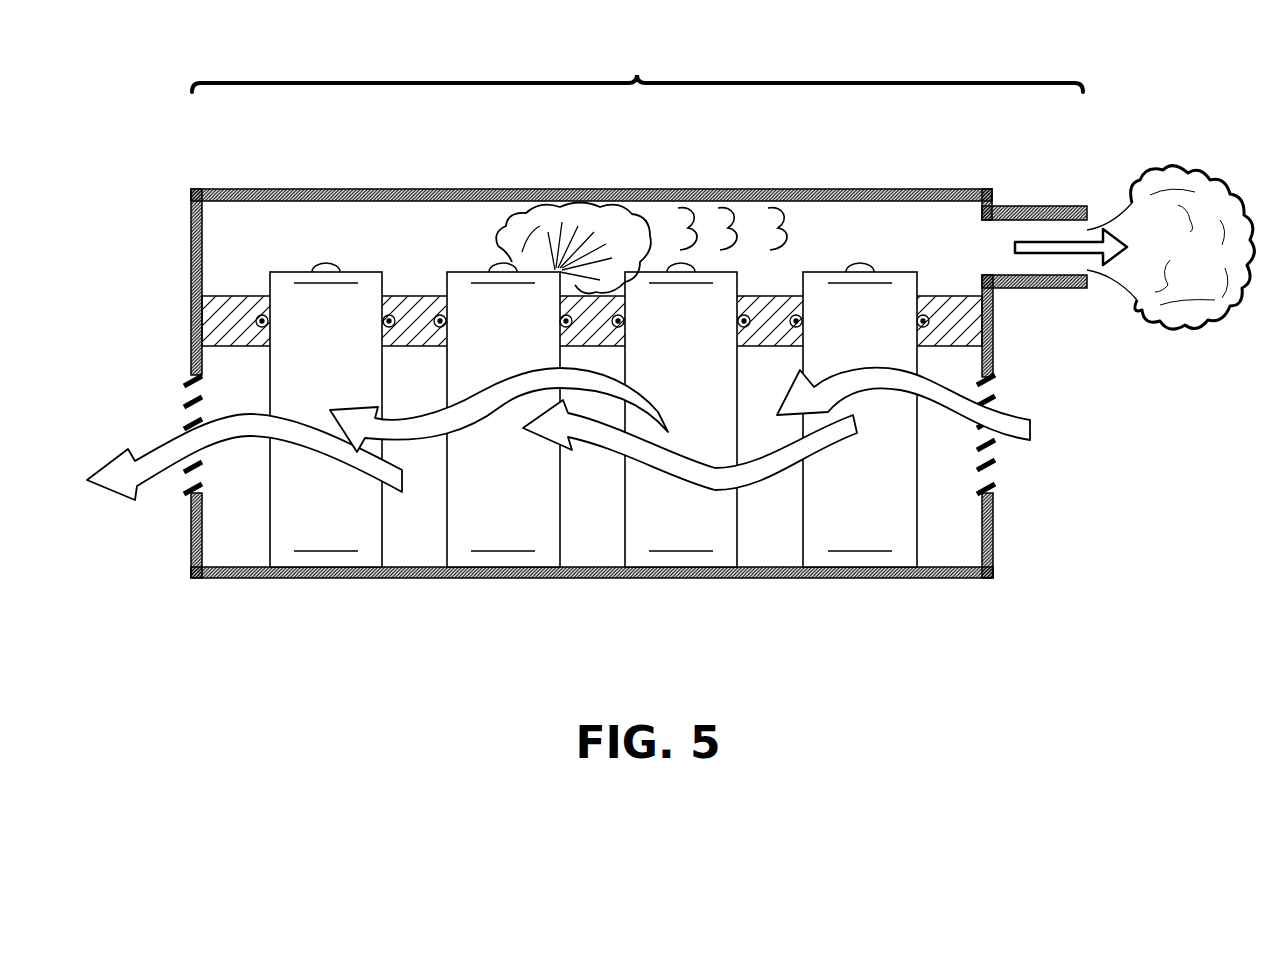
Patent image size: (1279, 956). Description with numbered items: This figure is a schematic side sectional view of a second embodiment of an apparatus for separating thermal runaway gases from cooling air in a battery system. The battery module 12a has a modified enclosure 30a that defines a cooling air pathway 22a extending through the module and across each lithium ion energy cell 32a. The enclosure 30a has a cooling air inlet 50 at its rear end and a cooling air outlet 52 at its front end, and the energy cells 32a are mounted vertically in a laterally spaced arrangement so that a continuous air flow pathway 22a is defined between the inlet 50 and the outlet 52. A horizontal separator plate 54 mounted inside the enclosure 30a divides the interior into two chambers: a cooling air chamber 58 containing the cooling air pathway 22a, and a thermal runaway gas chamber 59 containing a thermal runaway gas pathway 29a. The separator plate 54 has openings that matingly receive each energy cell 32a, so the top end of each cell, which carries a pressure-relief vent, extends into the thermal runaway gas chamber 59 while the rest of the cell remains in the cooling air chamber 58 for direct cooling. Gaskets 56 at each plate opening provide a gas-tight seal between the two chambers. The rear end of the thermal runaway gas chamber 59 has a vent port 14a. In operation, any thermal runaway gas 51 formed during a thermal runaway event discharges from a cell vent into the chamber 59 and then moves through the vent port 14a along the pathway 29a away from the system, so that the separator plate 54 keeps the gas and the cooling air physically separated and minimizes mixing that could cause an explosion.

The battery module 12a is at (637, 63).
The vent port 14a is at (1053, 204).
The cooling air pathway 22a is at (597, 440).
The thermal runaway gas pathway 29a is at (1042, 256).
The enclosure 30a is at (327, 580).
The lithium ion energy cell 32a is at (360, 517).
The cooling air inlet 50 is at (1010, 470).
The thermal runaway gas 51 is at (653, 219).
The cooling air outlet 52 is at (173, 404).
The separator plate 54 is at (231, 297).
The gasket 56 is at (399, 310).
The cooling air chamber 58 is at (775, 535).
The thermal runaway gas chamber 59 is at (878, 224).